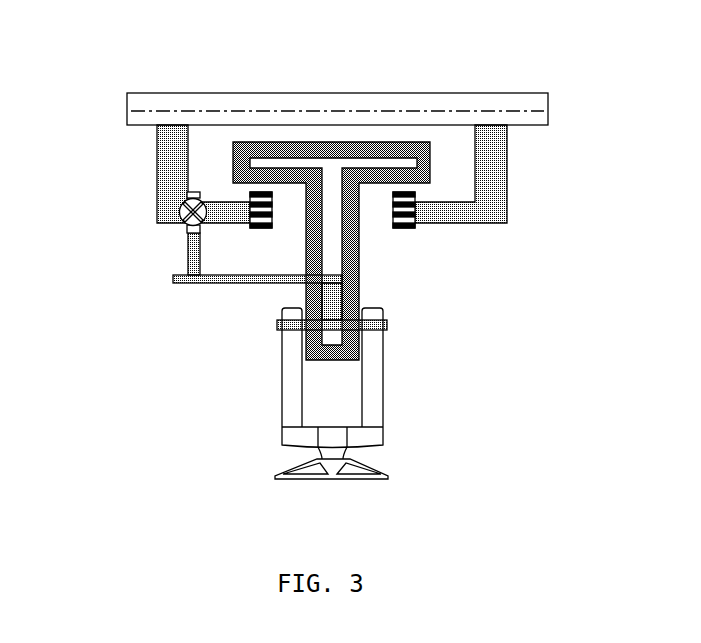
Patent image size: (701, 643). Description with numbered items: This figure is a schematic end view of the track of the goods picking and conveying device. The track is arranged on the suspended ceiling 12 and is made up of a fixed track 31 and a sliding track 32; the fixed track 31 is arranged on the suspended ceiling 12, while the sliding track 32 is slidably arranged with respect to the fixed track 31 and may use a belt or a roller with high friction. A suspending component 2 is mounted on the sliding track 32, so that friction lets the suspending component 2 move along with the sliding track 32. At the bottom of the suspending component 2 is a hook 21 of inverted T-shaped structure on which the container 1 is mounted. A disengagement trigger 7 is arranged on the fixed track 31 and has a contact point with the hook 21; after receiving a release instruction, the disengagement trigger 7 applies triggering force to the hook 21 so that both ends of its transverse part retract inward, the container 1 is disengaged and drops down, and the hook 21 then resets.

The container 1 is at (372, 402).
The suspending component 2 is at (417, 163).
The disengagement trigger 7 is at (180, 222).
The suspended ceiling 12 is at (312, 108).
The hook 21 is at (292, 325).
The fixed track 31 is at (172, 172).
The sliding track 32 is at (405, 227).